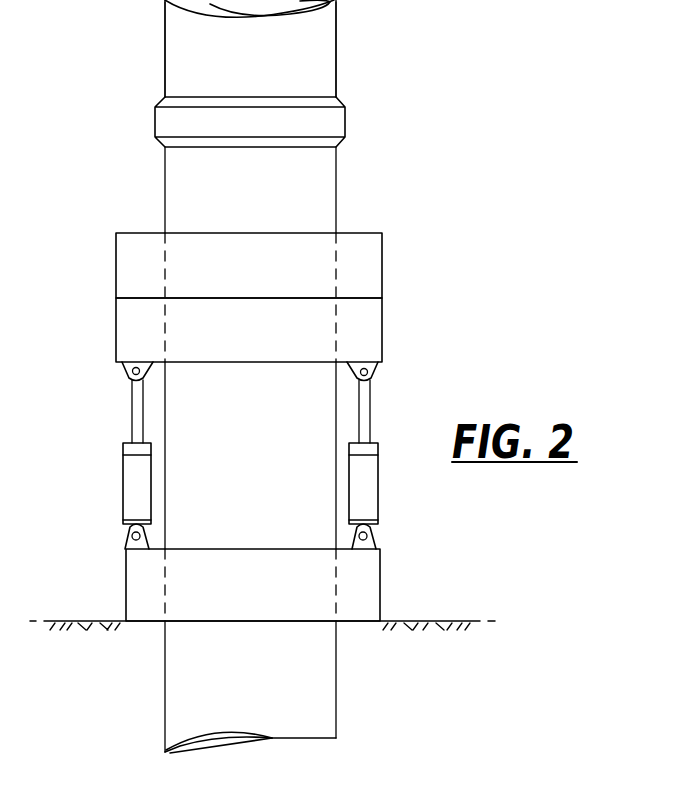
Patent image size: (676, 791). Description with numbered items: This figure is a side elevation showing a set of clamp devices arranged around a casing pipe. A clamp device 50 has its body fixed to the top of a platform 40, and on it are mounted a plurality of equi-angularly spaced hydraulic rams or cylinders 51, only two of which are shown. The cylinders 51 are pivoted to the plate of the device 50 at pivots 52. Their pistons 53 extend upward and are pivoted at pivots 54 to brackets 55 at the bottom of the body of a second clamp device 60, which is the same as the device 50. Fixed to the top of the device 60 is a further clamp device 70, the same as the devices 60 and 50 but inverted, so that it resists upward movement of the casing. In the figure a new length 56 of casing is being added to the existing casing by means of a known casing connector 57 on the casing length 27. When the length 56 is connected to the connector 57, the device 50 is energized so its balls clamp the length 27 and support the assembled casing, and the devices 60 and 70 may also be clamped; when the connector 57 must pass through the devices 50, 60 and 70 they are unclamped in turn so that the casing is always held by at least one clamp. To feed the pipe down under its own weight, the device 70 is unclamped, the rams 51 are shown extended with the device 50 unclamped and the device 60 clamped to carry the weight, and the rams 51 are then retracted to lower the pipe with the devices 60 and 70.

The casing length 27 is at (180, 684).
The platform 40 is at (72, 620).
The device 50 is at (362, 593).
The hydraulic rams/cylinders 51 is at (137, 480).
The pivot 52 is at (372, 538).
The pistons 53 is at (370, 413).
The pivot 54 is at (370, 372).
The brackets 55 is at (122, 368).
The new length of casing 56 is at (320, 79).
The casing connector 57 is at (323, 121).
The device 60 is at (133, 333).
The clamp device 70 is at (128, 264).